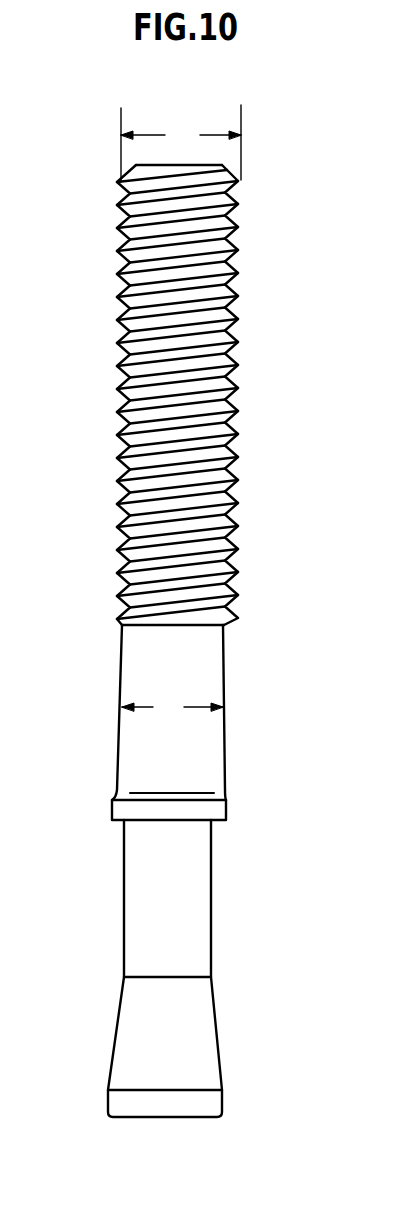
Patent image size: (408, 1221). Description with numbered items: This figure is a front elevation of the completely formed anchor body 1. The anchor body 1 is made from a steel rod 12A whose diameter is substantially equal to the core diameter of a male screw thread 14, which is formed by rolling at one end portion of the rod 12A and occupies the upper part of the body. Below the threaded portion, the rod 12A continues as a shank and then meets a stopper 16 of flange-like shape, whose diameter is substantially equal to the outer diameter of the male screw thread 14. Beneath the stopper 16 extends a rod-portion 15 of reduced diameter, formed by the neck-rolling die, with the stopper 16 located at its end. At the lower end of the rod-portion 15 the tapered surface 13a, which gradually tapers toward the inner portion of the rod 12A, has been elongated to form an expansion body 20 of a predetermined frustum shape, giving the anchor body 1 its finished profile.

The anchor body 1 is at (245, 558).
The male screw thread 14 is at (230, 371).
The steel rod 12A is at (208, 742).
The stopper 16 is at (222, 810).
The rod-portion of reduced diameter 15 is at (200, 897).
The expansion body 20 is at (205, 1048).
The tapered surface 13a is at (116, 1037).